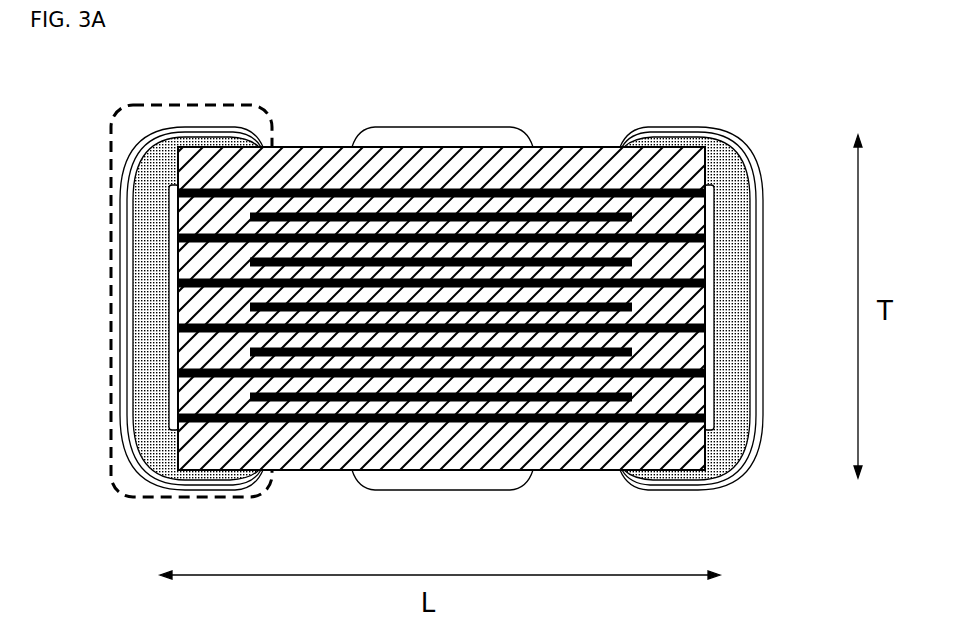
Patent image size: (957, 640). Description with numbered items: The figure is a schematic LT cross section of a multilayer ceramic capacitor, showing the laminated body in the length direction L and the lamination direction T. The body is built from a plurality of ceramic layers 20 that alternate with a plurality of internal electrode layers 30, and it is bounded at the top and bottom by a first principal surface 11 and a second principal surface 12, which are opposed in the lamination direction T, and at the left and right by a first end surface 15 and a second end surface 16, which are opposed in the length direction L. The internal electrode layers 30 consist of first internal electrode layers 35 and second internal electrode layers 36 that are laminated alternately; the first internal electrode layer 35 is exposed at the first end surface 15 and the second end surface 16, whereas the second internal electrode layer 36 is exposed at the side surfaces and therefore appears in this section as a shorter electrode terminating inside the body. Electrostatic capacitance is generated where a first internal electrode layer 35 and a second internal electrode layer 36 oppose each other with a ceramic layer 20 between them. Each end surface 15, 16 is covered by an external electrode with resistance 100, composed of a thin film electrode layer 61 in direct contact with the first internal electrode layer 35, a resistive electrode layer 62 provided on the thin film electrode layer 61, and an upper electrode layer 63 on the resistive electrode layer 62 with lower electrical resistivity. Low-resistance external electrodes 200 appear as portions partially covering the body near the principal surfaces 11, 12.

The external electrode with resistance 100 is at (165, 125).
The first principal surface 11 is at (300, 145).
The second principal surface 12 is at (317, 470).
The ceramic layer 20 is at (538, 228).
The low-resistance external electrode 200 is at (447, 137).
The first end surface 15 is at (177, 391).
The second end surface 16 is at (707, 391).
The internal electrode layer 30 is at (441, 335).
The first internal electrode layer 35 is at (223, 465).
The second internal electrode layer 36 is at (555, 425).
The thin film electrode layer 61 is at (170, 303).
The resistive electrode layer 62 is at (140, 250).
The upper electrode layer 63 is at (128, 192).